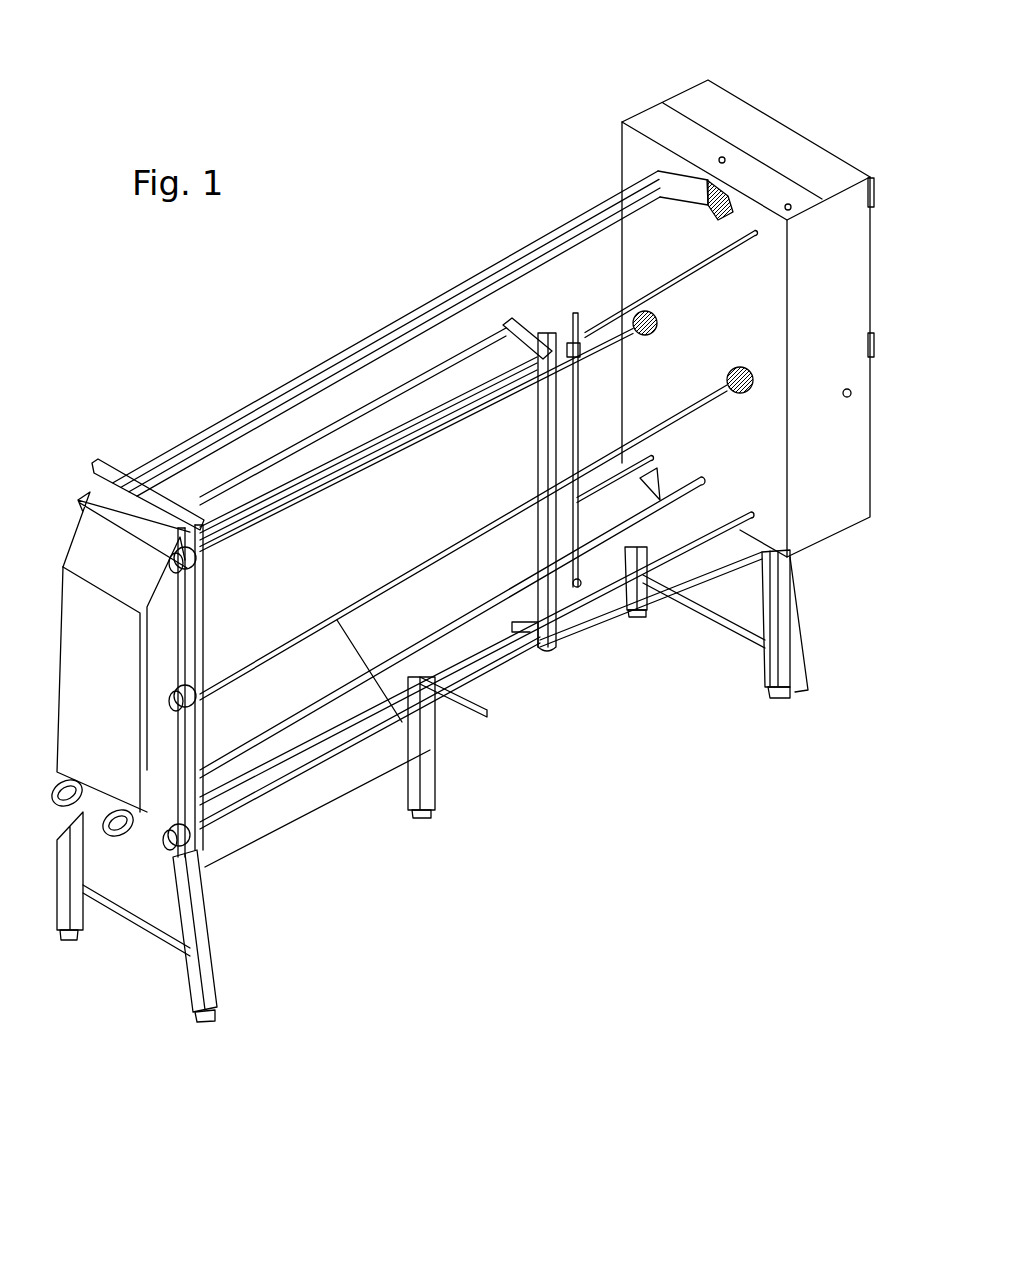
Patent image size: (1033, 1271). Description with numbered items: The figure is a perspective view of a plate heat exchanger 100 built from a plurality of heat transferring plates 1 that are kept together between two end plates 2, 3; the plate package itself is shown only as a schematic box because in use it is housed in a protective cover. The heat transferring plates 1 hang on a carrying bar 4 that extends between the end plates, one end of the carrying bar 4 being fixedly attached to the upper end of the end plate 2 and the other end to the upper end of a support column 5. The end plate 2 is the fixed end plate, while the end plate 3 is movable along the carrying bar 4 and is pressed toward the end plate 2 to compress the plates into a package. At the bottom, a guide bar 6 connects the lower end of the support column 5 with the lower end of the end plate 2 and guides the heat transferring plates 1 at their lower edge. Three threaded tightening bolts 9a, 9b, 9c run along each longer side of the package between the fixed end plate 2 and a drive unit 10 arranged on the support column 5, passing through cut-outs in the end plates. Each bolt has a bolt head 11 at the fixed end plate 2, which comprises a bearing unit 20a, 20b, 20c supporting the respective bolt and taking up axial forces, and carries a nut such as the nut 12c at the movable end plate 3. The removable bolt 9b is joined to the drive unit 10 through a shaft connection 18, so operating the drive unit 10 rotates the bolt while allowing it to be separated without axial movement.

The plate heat exchanger 100 is at (430, 232).
The heat transferring plates 1 is at (468, 623).
The end plate 2 is at (210, 827).
The end plate 3 is at (553, 612).
The carrying bar 4 is at (360, 380).
The support column 5 is at (727, 193).
The guide bar 6 is at (655, 555).
The tightening bolt 9a is at (322, 763).
The tightening bolt 9b is at (442, 805).
The tightening bolt 9c is at (373, 450).
The drive unit 10 is at (820, 460).
The bolt head 11 is at (170, 853).
The nut 12c is at (575, 385).
The shaft connection 18 is at (738, 525).
The bearing unit 20a is at (176, 837).
The bearing unit 20b is at (200, 703).
The bearing unit 20c is at (200, 563).